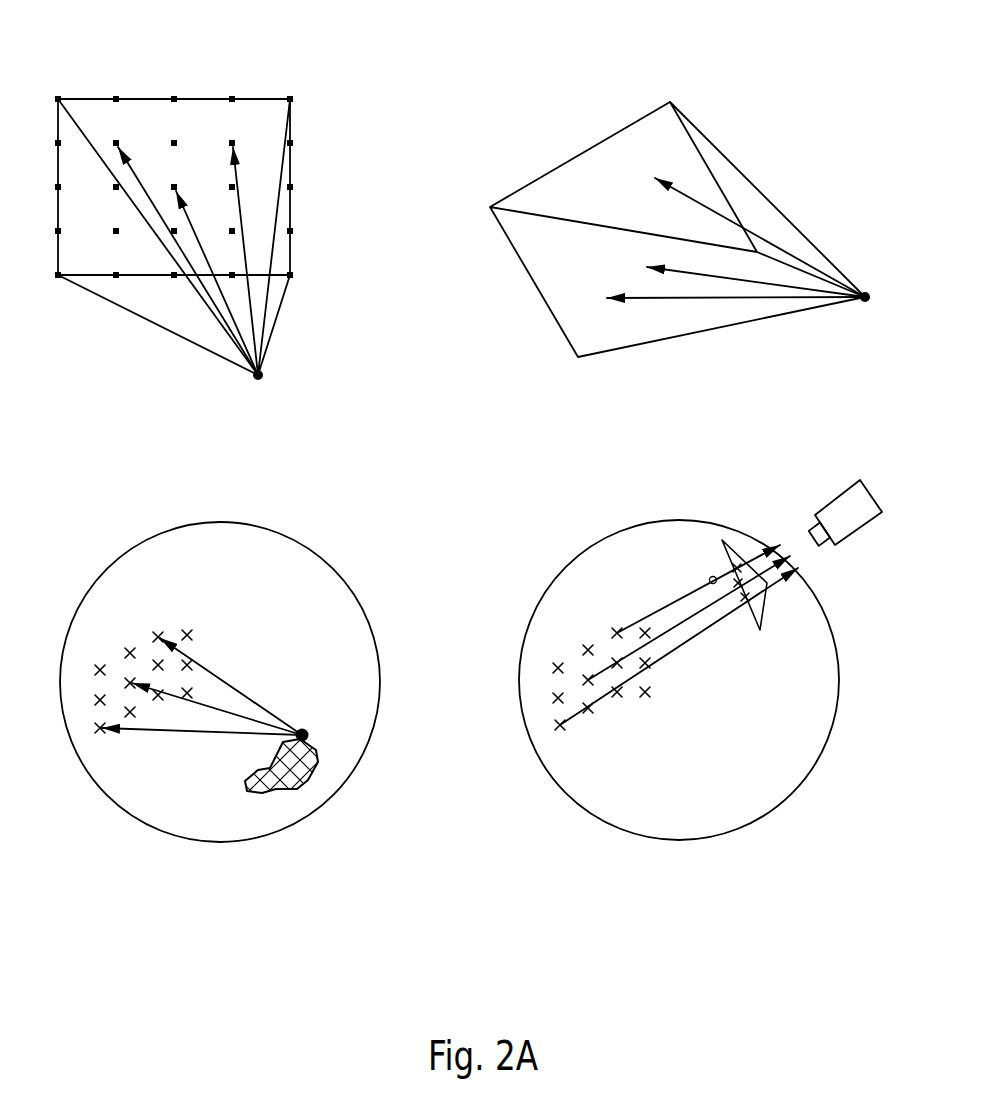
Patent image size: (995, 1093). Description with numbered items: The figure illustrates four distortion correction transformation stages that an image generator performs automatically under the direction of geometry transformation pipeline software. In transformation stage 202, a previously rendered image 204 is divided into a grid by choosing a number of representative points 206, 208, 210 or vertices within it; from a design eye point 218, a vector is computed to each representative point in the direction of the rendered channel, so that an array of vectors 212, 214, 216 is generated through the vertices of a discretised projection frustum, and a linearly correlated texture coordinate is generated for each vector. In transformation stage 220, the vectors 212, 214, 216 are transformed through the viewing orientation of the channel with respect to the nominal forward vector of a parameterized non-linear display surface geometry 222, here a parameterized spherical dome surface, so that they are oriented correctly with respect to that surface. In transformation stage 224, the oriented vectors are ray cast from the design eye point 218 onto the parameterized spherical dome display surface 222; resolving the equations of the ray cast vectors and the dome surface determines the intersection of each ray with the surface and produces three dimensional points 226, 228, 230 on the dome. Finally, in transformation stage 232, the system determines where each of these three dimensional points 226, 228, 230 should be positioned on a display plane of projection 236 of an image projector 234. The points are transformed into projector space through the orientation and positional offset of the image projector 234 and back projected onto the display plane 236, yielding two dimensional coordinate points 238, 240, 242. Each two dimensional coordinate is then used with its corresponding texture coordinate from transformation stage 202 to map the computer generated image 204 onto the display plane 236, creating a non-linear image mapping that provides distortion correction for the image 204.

The transformation stage 202 is at (69, 64).
The rendered image 204 is at (253, 99).
The representative point 206 is at (117, 143).
The representative point 208 is at (175, 187).
The representative point 210 is at (233, 143).
The vector 212 is at (213, 308).
The vector 214 is at (240, 336).
The vector 216 is at (255, 327).
The design eye point 218 is at (262, 375).
The transformation stage 220 is at (597, 95).
The parameterized non-linear display surface geometry 222 is at (337, 573).
The transformation stage 224 is at (66, 532).
The three dimensional point 226 is at (101, 733).
The three dimensional point 228 is at (129, 682).
The three dimensional point 230 is at (157, 636).
The transformation stage 232 is at (522, 530).
The image projector 234 is at (848, 542).
The display plane of projection 236 is at (767, 604).
The two dimensional coordinate point 238 is at (745, 598).
The two dimensional coordinate point 240 is at (710, 582).
The two dimensional coordinate point 242 is at (737, 568).